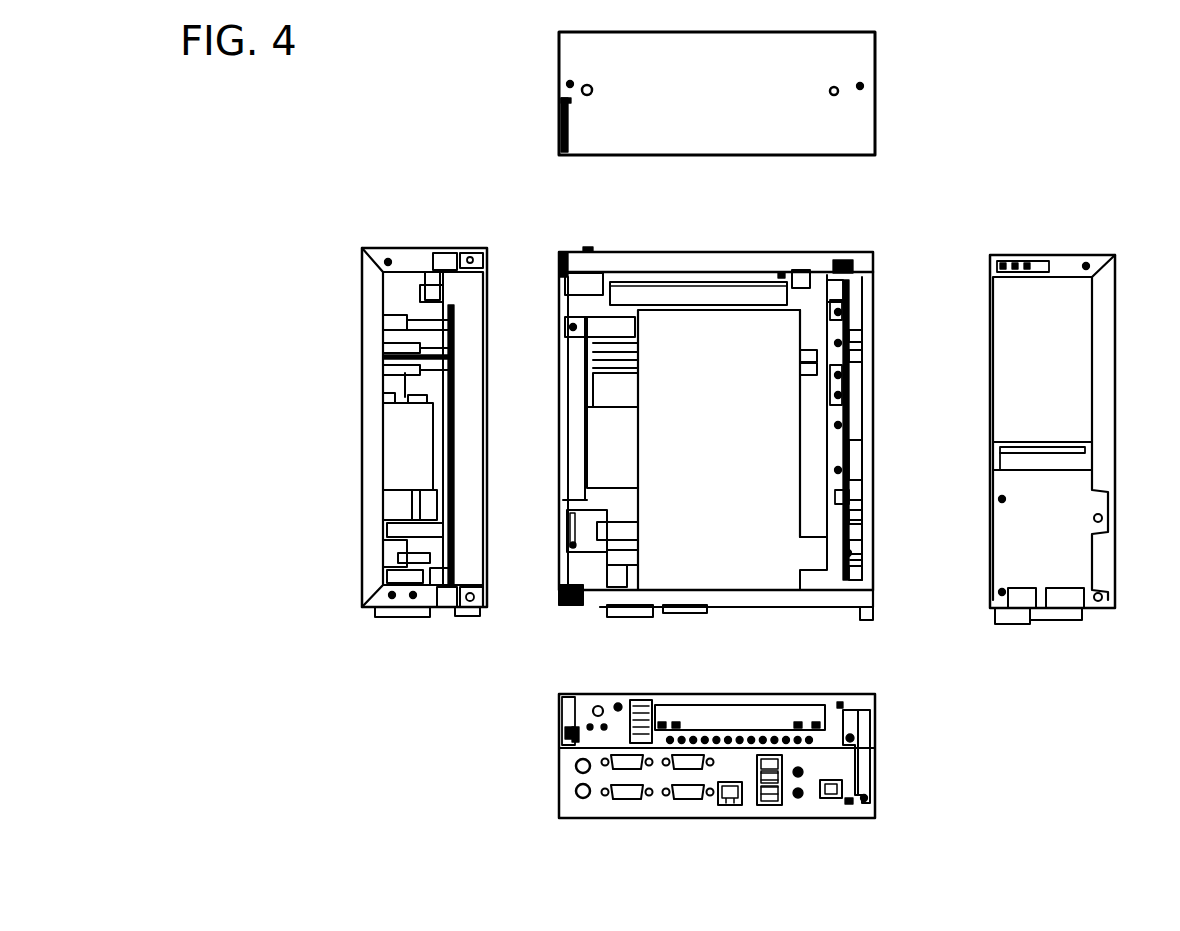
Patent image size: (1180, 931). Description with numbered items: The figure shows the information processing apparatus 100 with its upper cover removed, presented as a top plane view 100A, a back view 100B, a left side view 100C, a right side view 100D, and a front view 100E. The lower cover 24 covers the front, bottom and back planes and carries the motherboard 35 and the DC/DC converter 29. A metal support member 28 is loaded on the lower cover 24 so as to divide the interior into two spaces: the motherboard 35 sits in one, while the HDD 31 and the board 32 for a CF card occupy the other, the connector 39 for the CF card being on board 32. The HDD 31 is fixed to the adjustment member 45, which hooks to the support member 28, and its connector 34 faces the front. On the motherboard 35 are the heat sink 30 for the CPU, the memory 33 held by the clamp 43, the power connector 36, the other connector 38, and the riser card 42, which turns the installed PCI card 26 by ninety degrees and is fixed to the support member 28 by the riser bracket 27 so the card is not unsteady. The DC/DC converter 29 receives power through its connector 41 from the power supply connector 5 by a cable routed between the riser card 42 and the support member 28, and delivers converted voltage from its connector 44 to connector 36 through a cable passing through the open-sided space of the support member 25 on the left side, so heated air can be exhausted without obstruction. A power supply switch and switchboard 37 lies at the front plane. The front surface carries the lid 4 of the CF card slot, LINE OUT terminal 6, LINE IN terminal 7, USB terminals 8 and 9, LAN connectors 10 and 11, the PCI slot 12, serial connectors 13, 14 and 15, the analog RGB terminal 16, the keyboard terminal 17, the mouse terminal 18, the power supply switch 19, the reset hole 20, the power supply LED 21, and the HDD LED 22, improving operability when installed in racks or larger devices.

The information processing apparatus with upper cover removed 100 is at (1046, 128).
The top plane view 100A is at (560, 242).
The back view 100B is at (544, 70).
The left side view 100C is at (387, 242).
The right side view 100D is at (1002, 242).
The front view 100E is at (524, 711).
The lower cover 24 is at (866, 110).
The DC/DC converter 29 is at (652, 270).
The connector 41 is at (797, 270).
The connector 44 is at (575, 292).
The memory 33 is at (440, 350).
The riser card 42 is at (440, 381).
The PCI card 26 is at (440, 412).
The support member 25 is at (565, 440).
The heat sink 30 is at (425, 474).
The motherboard 35 is at (630, 391).
The clamp 43 is at (812, 383).
The connector 36 is at (632, 533).
The connector 38 is at (632, 558).
The HDD 31 is at (1000, 304).
The support member 28 is at (866, 336).
The adjustment member 45 is at (863, 358).
The connector 34 is at (1000, 455).
The riser bracket 27 is at (866, 520).
The board 32 is at (1000, 548).
The connector 39 is at (866, 578).
The power supply switch and switchboard 37 is at (583, 604).
The power supply switch 19 is at (598, 706).
The serial connector 14 is at (652, 720).
The PCI slot 12 is at (723, 708).
The LED for power supply 21 is at (585, 700).
The LED for HDD 22 is at (620, 715).
The serial connector 13 is at (686, 735).
The connector for LAN 10 is at (790, 760).
The lid 4 is at (872, 746).
The USB terminal 9 is at (757, 775).
The LINE IN terminal 7 is at (805, 772).
The hole for resetting 20 is at (576, 758).
The terminal for mouse 18 is at (574, 788).
The terminal for keyboard 17 is at (583, 800).
The analog RGB terminal 16 is at (627, 801).
The serial connector 15 is at (688, 801).
The connector for LAN 11 is at (732, 805).
The USB terminal 8 is at (768, 805).
The LINE OUT terminal 6 is at (798, 800).
The connector 5 is at (831, 800).